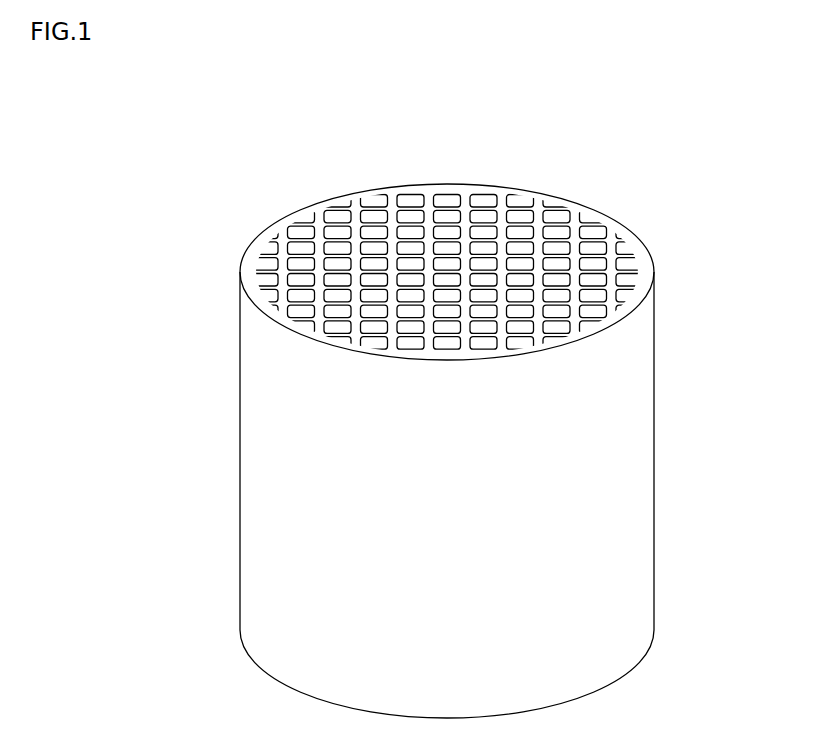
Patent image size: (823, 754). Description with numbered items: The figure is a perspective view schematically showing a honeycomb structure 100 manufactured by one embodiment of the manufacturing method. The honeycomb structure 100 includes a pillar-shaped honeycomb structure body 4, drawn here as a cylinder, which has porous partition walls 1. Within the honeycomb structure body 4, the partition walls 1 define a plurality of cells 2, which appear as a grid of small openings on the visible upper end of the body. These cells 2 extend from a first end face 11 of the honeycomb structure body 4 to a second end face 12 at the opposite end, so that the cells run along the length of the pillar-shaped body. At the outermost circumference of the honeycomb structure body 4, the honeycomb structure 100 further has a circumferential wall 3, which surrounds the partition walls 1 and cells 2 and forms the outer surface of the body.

The honeycomb structure 100 is at (709, 116).
The partition wall 1 is at (468, 205).
The cell 2 is at (411, 200).
The circumferential wall 3 is at (651, 262).
The honeycomb structure body 4 is at (660, 449).
The first end face 11 is at (250, 237).
The second end face 12 is at (271, 684).